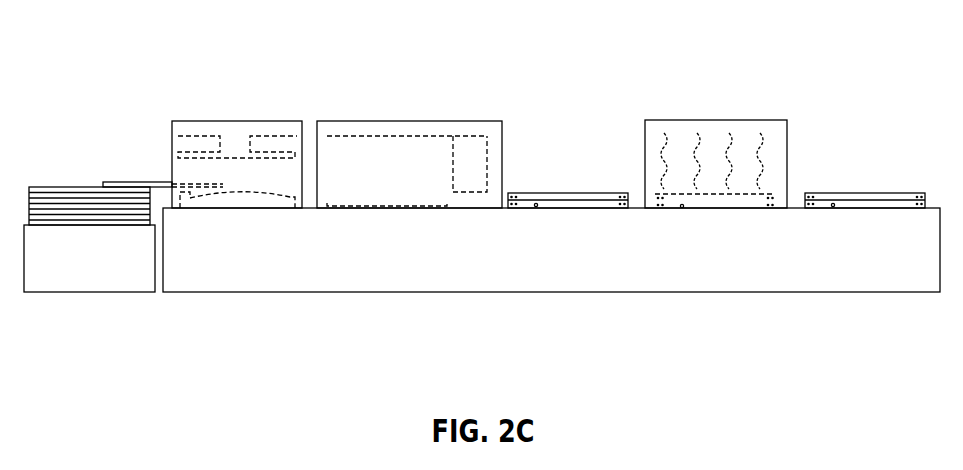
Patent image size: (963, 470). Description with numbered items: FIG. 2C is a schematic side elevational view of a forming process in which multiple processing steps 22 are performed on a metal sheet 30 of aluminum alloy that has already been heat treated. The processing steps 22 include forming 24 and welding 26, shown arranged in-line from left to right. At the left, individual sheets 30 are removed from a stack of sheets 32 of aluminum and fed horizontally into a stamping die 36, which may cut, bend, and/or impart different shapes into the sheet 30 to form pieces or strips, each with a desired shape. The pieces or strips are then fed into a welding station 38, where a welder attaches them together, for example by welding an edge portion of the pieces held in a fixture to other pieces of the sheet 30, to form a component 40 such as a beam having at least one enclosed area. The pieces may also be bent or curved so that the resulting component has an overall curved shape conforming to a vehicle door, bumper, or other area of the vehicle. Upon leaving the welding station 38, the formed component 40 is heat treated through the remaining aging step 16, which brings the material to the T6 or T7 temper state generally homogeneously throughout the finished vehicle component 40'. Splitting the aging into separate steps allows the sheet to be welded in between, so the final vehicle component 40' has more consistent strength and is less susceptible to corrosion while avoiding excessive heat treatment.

The aging step 16 is at (810, 75).
The processing steps 22 is at (520, 75).
The forming 24 is at (302, 115).
The welding 26 is at (500, 115).
The metal sheet 30 is at (163, 182).
The stack of sheets 32 is at (68, 187).
The stamping die 36 is at (245, 199).
The welding station 38 is at (472, 185).
The component 40 is at (568, 154).
The vehicle component 40' is at (865, 154).